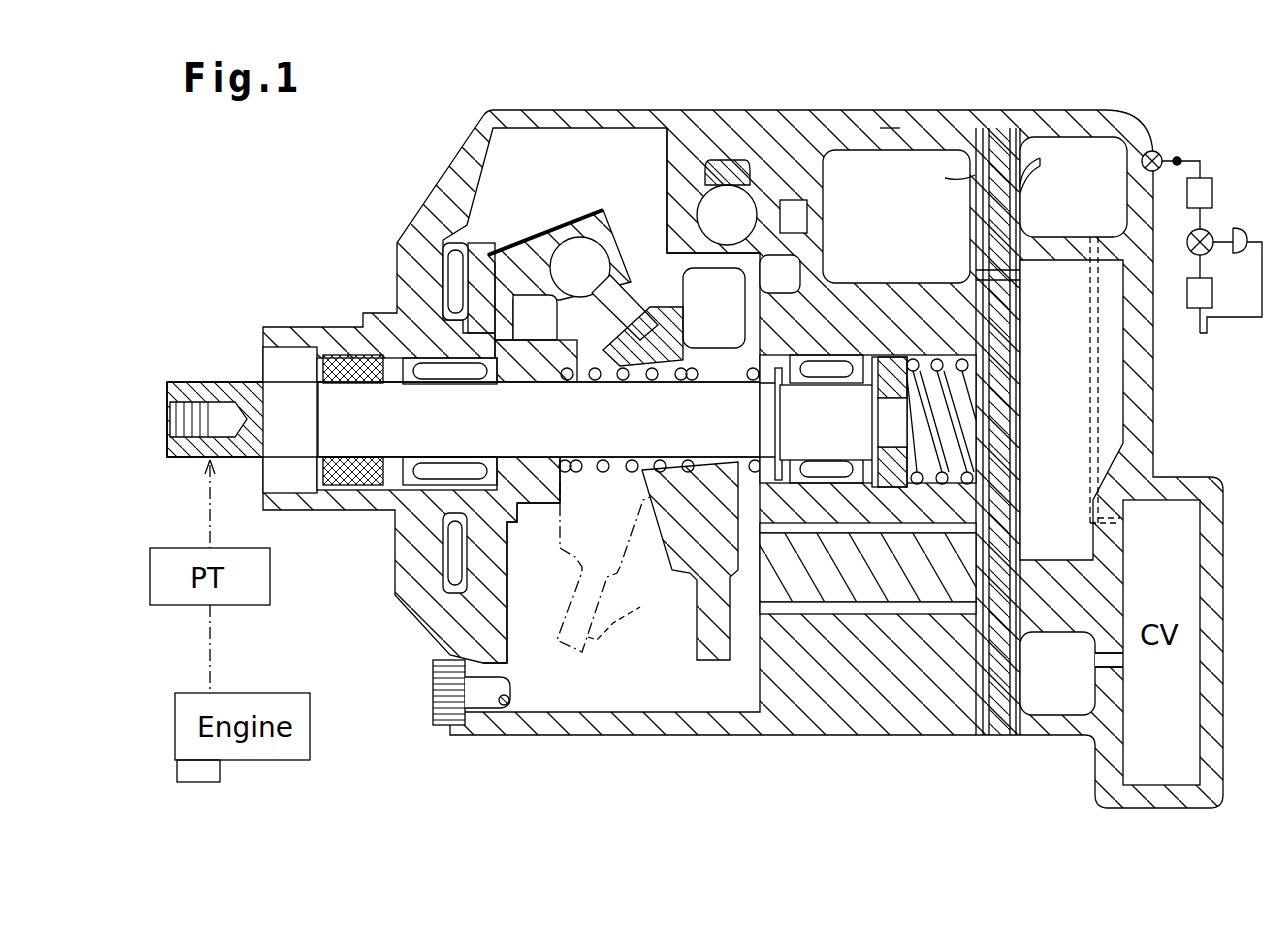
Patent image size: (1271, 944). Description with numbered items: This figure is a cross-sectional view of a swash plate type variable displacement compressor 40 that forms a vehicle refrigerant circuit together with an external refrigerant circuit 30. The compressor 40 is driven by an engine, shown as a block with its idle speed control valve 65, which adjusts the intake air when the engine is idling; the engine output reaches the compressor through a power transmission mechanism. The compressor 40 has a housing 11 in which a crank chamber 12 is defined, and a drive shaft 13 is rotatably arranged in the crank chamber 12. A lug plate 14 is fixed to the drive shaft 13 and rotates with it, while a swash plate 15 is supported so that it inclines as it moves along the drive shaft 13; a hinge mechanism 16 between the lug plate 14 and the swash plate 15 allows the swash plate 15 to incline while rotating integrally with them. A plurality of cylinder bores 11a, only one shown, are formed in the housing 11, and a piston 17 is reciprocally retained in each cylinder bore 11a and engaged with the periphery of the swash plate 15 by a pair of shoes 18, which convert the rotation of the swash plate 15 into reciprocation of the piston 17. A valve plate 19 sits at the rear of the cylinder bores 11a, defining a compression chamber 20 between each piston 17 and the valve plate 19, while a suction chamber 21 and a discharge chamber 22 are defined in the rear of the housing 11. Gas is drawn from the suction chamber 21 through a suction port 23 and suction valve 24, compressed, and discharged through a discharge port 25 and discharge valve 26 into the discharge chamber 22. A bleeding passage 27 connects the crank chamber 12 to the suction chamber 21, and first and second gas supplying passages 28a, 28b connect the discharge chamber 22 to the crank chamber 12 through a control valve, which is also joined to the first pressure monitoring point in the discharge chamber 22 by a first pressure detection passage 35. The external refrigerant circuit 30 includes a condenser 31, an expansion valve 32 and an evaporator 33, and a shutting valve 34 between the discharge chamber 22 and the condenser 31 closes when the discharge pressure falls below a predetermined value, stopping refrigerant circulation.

The housing 11 is at (637, 735).
The cylinder bore 11a is at (898, 140).
The crank chamber 12 is at (571, 577).
The drive shaft 13 is at (617, 460).
The lug plate 14 is at (493, 262).
The swash plate 15 is at (703, 602).
The hinge mechanism 16 is at (547, 226).
The piston 17 is at (772, 150).
The shoes 18 is at (737, 200).
The valve plate 19 is at (1005, 125).
The compression chamber 20 is at (985, 150).
The suction chamber 21 is at (1071, 410).
The discharge chamber 22 is at (1075, 426).
The suction port 23 is at (1003, 275).
The suction valve 24 is at (975, 255).
The discharge port 25 is at (942, 177).
The discharge valve 26 is at (1032, 170).
The bleeding passage 27 is at (838, 543).
The first gas supplying passage 28a is at (1103, 663).
The second gas supplying passage 28b is at (880, 618).
The external refrigerant circuit 30 is at (1198, 198).
The condenser 31 is at (1212, 182).
The expansion valve 32 is at (1212, 232).
The evaporator 33 is at (1214, 292).
The shutting valve 34 is at (1150, 150).
The first pressure detection passage 35 is at (1098, 440).
The variable displacement compressor 40 is at (413, 132).
The idle speed control valve 65 is at (218, 782).